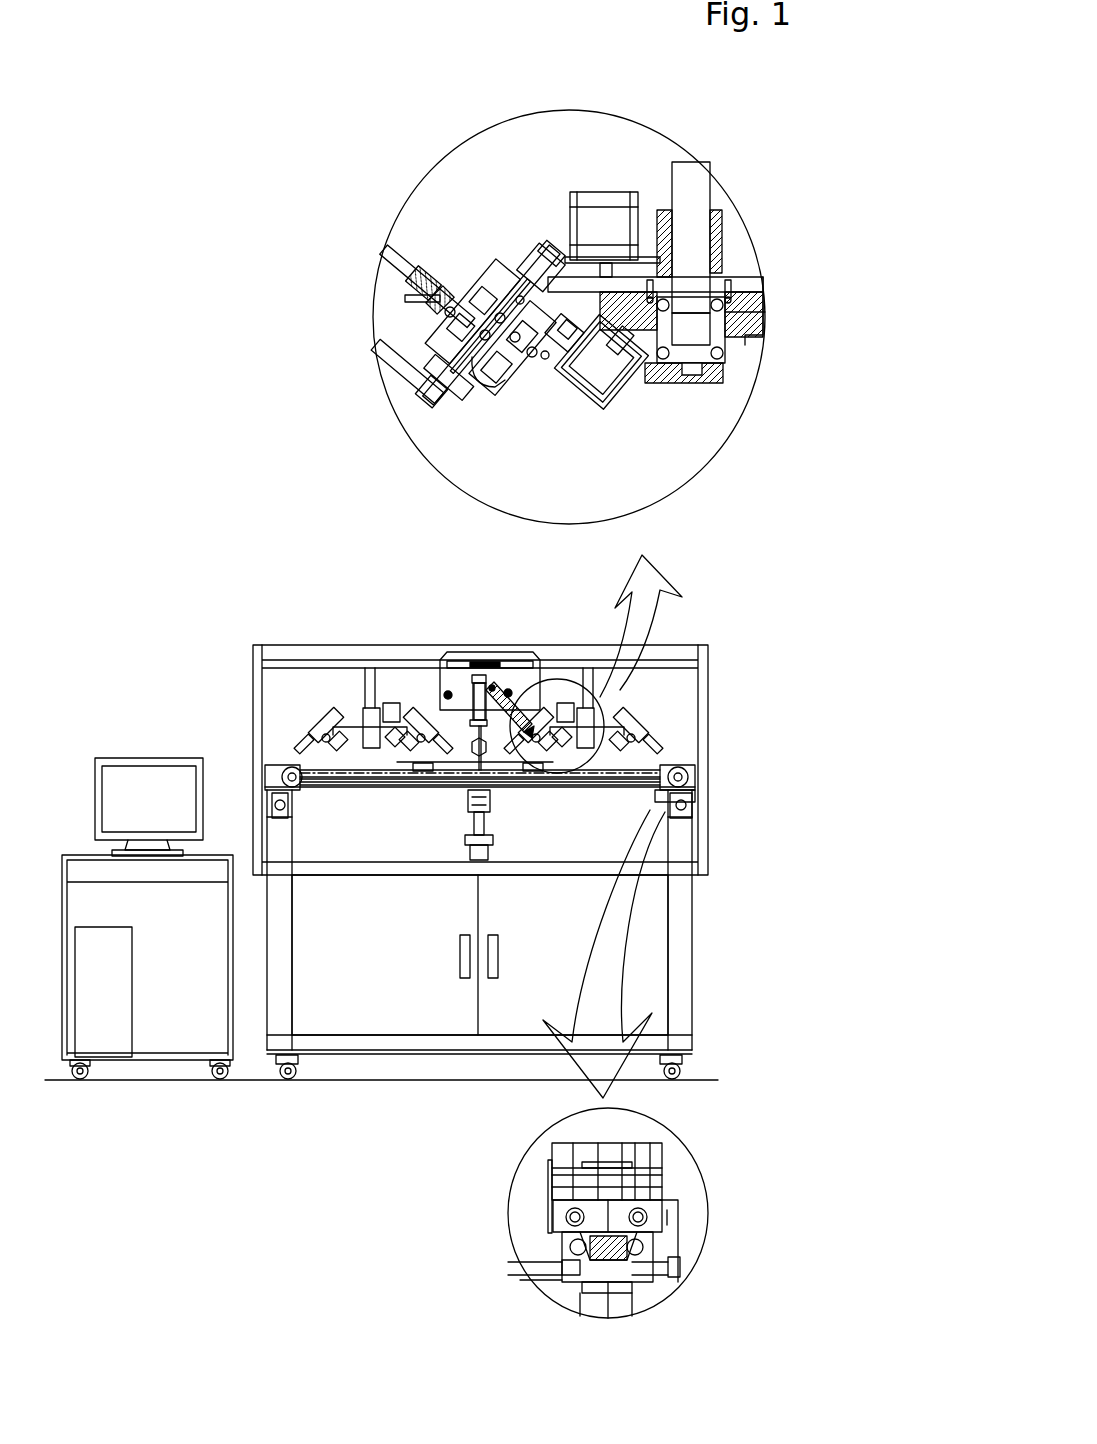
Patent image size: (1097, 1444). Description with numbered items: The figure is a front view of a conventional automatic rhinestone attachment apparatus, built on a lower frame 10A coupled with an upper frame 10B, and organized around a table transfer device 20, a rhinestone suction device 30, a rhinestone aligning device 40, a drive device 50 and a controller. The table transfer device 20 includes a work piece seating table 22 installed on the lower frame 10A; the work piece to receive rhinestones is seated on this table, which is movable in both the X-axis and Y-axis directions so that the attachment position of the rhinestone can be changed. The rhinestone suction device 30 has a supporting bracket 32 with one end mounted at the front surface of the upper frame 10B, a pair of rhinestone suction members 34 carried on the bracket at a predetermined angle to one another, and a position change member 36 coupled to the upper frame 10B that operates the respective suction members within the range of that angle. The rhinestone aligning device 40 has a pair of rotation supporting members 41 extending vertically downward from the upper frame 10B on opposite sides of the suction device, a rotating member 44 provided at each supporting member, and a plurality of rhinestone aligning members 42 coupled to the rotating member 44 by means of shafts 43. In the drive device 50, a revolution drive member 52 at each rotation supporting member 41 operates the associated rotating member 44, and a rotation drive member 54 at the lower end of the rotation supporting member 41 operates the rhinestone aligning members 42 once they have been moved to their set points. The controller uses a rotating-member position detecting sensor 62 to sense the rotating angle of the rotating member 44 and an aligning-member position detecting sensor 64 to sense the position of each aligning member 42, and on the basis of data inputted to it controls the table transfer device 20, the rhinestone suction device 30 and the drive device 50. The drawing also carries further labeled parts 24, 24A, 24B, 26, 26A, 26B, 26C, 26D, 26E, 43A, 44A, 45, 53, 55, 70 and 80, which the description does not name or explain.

The lower frame 10A is at (683, 998).
The upper frame 10B is at (708, 670).
The table transfer device 20 is at (497, 928).
The work piece seating table 22 is at (462, 760).
The slider block 24 is at (704, 805).
The guide rail 24A is at (650, 1249).
The guide block 24B is at (623, 1210).
The belt conveyor 26 is at (683, 762).
The drive pulley 26A is at (640, 830).
The belt 26B is at (418, 787).
The motor 26C is at (272, 795).
The rail 26D is at (358, 785).
The driven pulley 26E is at (278, 762).
The rhinestone suction device 30 is at (573, 593).
The supporting bracket 32 is at (494, 676).
The rhinestone suction members 34 is at (438, 304).
The position change member 36 is at (503, 688).
The rhinestone aligning device 40 is at (480, 448).
The rotation supporting members 41 is at (705, 207).
The rhinestone aligning members 42 is at (447, 383).
The shafts 43 is at (500, 388).
The gripper base 43A is at (540, 402).
The rotating member 44 is at (745, 322).
The bearing block 44A is at (700, 370).
The gripper arm 45 is at (540, 270).
The drive device 50 is at (720, 78).
The revolution drive member 52 is at (617, 290).
The rotating block 53 is at (610, 345).
The rotation drive member 54 is at (700, 207).
The coupling 55 is at (558, 382).
The rotating-member position detecting sensor 62 is at (612, 191).
The aligning-member position detecting sensor 64 is at (552, 257).
The actuator 70 is at (460, 834).
The controller computer 80 is at (128, 752).